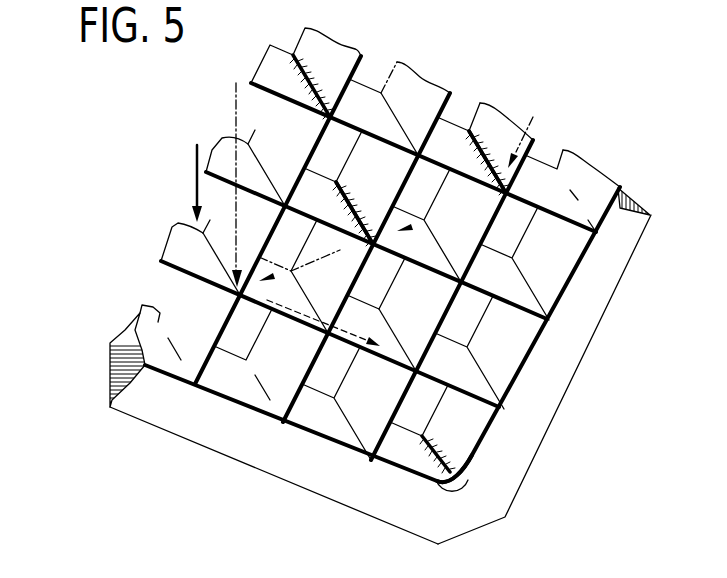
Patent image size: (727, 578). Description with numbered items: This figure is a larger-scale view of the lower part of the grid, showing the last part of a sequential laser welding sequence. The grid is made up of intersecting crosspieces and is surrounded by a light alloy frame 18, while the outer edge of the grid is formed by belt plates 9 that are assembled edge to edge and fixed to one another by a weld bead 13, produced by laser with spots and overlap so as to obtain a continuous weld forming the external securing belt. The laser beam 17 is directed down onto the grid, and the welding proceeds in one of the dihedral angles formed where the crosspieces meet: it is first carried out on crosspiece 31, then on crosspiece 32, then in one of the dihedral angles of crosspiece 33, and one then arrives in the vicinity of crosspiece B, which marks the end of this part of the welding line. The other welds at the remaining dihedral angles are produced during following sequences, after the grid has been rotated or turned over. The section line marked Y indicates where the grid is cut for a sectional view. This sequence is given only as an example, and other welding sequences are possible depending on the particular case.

The laser beam 17 is at (235, 108).
The crosspiece 31 is at (496, 160).
The crosspiece 32 is at (378, 262).
The belt plate 9 is at (518, 380).
The weld bead 13 is at (447, 452).
The light alloy frame 18 is at (150, 409).
The crosspiece 33 is at (240, 330).
The crosspiece B is at (416, 375).
The section line Y- Y is at (598, 161).